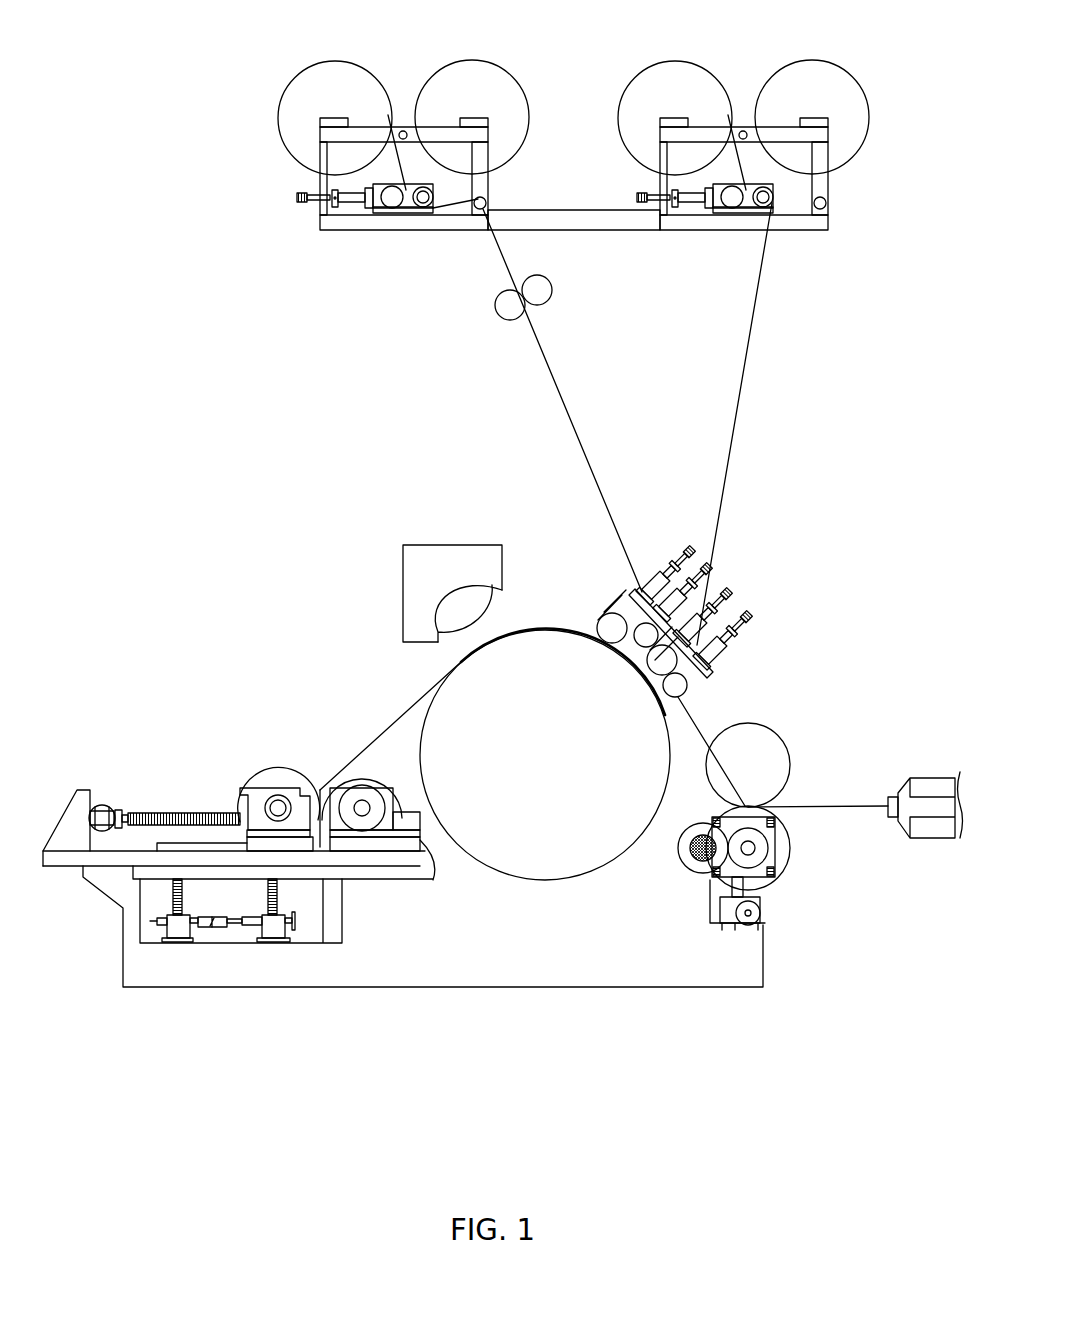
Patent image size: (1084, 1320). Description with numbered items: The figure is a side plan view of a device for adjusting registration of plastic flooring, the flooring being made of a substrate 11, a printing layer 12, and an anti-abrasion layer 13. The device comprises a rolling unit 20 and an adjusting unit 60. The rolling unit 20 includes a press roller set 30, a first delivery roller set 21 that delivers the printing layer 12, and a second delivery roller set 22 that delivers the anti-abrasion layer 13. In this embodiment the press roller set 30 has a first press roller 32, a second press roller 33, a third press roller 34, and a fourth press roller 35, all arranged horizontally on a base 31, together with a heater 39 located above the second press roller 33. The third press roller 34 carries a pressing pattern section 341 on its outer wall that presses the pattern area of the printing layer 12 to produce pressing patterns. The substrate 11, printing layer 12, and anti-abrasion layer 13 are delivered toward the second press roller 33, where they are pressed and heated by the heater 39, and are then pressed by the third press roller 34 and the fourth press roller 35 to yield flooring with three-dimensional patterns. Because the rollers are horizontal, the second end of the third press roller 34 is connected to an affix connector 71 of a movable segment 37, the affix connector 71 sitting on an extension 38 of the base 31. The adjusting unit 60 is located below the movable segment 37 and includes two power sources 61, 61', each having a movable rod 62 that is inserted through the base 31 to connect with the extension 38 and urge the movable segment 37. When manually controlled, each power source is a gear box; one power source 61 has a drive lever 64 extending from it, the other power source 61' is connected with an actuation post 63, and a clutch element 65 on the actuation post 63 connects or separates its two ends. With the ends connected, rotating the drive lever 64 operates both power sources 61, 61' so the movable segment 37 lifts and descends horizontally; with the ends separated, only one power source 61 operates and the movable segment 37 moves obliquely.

The substrate 11 is at (862, 805).
The printing layer 12 is at (762, 263).
The anti-abrasion layer 13 is at (507, 255).
The rolling unit 20 is at (180, 214).
The first delivery roller set 21 is at (822, 183).
The second delivery roller set 22 is at (323, 182).
The press roller set 30 is at (786, 663).
The base 31 is at (370, 872).
The first press roller 32 is at (826, 830).
The second press roller 33 is at (510, 855).
The third press roller 34 is at (258, 776).
The pressing pattern section 341 is at (268, 768).
The fourth press roller 35 is at (372, 775).
The movable segment 37 is at (260, 782).
The extension 38 is at (76, 856).
The heater 39 is at (410, 610).
The adjusting unit 60 is at (313, 1033).
The power source 61 is at (273, 957).
The power source 61' is at (171, 975).
The movable rod 62 is at (175, 898).
The actuation post 63 is at (235, 927).
The drive lever 64 is at (295, 922).
The clutch element 65 is at (218, 925).
The affix connector 71 is at (243, 812).